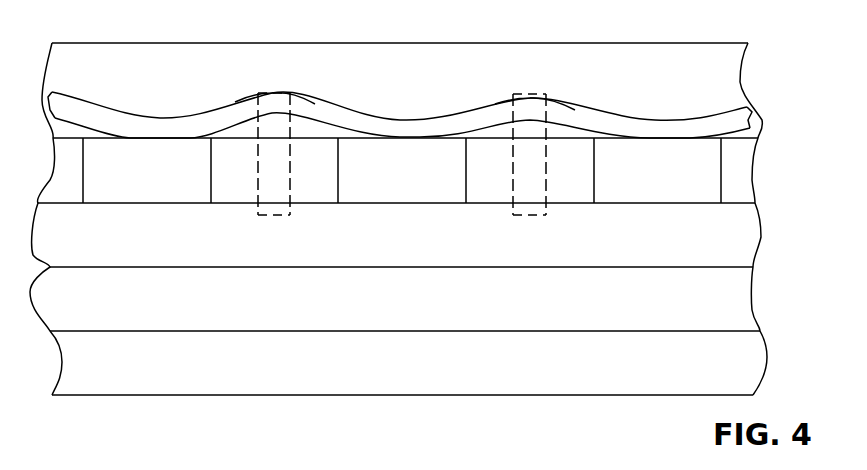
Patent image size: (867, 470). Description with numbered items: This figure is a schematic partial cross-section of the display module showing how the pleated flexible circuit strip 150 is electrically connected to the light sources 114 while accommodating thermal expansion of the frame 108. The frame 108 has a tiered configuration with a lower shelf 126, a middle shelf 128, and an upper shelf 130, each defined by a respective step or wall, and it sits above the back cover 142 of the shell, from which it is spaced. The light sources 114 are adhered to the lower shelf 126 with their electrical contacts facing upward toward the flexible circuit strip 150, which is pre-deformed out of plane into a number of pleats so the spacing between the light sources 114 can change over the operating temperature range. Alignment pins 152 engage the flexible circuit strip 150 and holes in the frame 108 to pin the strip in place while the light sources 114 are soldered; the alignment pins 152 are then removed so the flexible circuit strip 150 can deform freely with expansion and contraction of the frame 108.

The frame 108 is at (755, 235).
The light sources 114 is at (402, 170).
The lower shelf 126 is at (735, 203).
The middle shelf 128 is at (760, 128).
The upper shelf 130 is at (572, 42).
The back cover 142 is at (405, 363).
The flexible circuit strip 150 is at (310, 100).
The alignment pins 152 is at (291, 190).